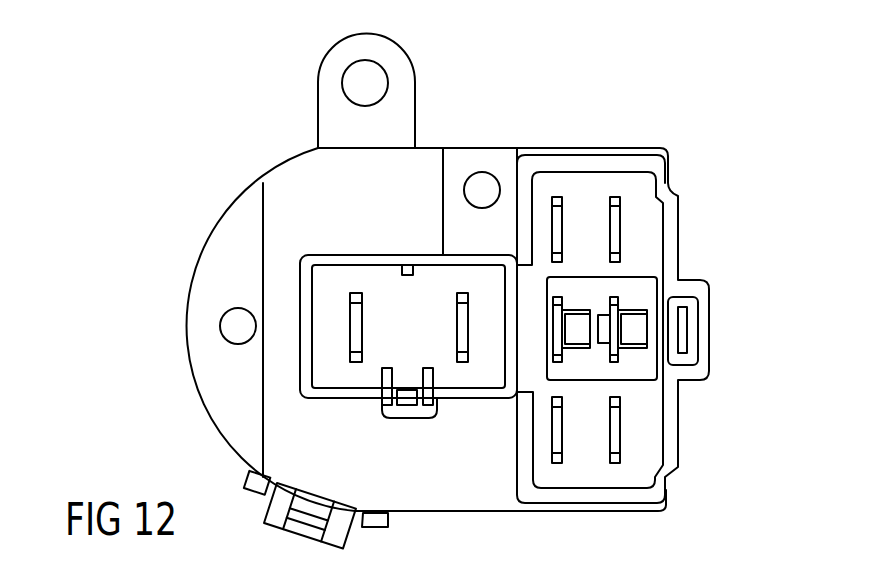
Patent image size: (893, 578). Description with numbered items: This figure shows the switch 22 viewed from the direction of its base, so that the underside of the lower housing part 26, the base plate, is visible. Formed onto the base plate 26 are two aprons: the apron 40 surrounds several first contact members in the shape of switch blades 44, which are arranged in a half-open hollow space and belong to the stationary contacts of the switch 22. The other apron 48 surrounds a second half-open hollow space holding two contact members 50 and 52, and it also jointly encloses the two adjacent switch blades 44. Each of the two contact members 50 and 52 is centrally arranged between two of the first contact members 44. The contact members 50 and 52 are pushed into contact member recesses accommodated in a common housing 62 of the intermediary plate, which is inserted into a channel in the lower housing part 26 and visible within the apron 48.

The switch 22 is at (477, 95).
The lower housing part 26 is at (236, 230).
The apron 40 is at (377, 258).
The switch blades 44 is at (611, 213).
The apron 48 is at (673, 210).
The contact member 50 is at (617, 358).
The contact member 52 is at (558, 362).
The housing 62 is at (642, 295).